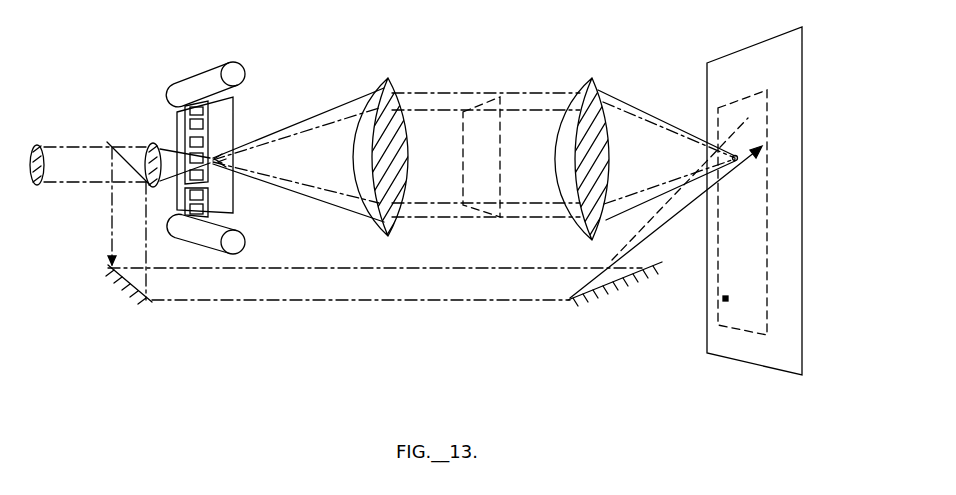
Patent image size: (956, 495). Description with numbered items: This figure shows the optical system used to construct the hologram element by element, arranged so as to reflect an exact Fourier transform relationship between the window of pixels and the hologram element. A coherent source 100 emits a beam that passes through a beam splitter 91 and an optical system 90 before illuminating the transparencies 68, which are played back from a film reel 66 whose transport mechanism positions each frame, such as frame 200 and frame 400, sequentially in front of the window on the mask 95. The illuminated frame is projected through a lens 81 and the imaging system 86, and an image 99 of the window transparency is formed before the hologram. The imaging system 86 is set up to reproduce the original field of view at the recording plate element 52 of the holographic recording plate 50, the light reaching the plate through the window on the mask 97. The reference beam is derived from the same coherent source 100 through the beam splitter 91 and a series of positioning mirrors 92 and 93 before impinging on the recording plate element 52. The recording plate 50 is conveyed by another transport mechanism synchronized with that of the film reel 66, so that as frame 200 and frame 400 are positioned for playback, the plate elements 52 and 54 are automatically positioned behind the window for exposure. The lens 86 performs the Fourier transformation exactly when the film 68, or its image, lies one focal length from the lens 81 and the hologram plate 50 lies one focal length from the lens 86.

The coherent source 100 is at (38, 186).
The beam splitter 91 is at (119, 143).
The optical system 90 is at (155, 143).
The film reel 66 is at (232, 76).
The transparencies 68 is at (208, 108).
The transparency frame 200 is at (205, 127).
The mask 95 is at (233, 193).
The transparency frame 400 is at (208, 213).
The lens 81 is at (390, 82).
The image of the window transparency 99 is at (483, 92).
The imaging system 86 is at (596, 82).
The mask 97 is at (721, 343).
The holographic recording plate 50 is at (767, 295).
The recording plate element 52 is at (742, 150).
The recording plate element 54 is at (721, 300).
The positioning mirror 92 is at (128, 290).
The positioning mirror 93 is at (609, 290).